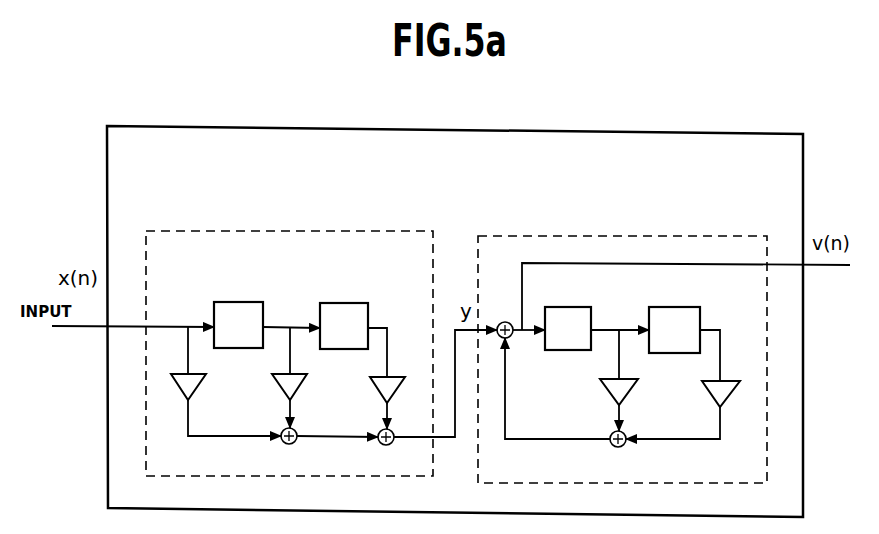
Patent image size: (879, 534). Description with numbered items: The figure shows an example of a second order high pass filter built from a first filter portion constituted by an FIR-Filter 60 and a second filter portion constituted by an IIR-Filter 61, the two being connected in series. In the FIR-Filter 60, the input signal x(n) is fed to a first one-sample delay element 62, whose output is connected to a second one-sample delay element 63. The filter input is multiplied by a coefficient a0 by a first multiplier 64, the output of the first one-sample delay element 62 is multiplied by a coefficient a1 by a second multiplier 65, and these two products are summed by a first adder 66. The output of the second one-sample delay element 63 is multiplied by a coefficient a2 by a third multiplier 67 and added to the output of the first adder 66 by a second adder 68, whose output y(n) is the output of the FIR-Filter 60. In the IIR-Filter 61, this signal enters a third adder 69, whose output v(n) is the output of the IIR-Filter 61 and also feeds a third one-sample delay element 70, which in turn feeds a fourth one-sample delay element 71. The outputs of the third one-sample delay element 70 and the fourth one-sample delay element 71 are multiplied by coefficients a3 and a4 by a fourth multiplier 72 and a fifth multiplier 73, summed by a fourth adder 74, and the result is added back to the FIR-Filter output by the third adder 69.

The FIR-Filter 60 is at (291, 231).
The IIR-Filter 61 is at (603, 236).
The first one-sample delay element 62 is at (241, 302).
The second one-sample delay element 63 is at (340, 304).
The first multiplier 64 is at (200, 388).
The second multiplier 65 is at (301, 390).
The first adder 66 is at (284, 444).
The third multiplier 67 is at (398, 391).
The second adder 68 is at (389, 445).
The third adder 69 is at (504, 321).
The third one-sample delay element 70 is at (565, 307).
The fourth one-sample delay element 71 is at (670, 307).
The fourth multiplier 72 is at (608, 394).
The fifth multiplier 73 is at (710, 395).
The fourth adder 74 is at (624, 446).